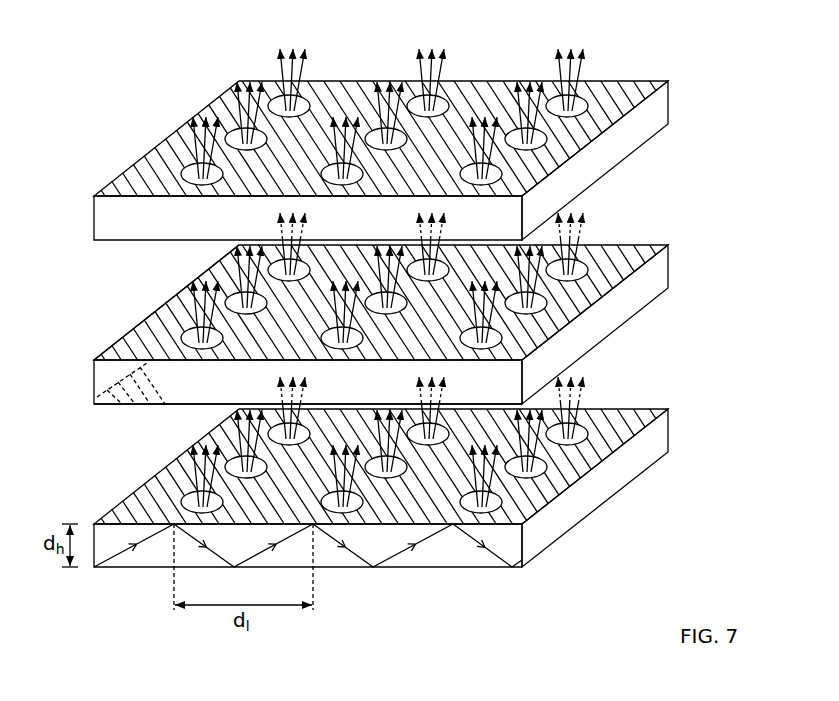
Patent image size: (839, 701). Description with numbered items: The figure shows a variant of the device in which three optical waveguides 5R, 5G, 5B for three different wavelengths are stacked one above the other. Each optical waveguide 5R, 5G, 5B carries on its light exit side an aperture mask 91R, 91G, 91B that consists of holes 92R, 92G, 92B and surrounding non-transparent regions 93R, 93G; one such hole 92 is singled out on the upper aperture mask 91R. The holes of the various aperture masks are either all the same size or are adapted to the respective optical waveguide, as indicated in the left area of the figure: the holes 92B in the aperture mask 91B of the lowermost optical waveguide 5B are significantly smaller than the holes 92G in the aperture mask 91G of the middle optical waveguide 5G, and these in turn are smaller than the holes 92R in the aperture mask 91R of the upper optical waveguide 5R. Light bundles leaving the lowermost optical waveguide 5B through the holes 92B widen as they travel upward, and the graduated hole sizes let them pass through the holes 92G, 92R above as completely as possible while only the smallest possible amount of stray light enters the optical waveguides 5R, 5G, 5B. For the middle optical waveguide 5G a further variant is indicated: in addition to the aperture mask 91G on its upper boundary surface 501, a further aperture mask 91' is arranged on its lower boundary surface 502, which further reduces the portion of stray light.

The optical waveguide 5R is at (652, 118).
The optical waveguide 5G is at (652, 282).
The optical waveguide 5B is at (652, 446).
The aperture mask 91R is at (652, 87).
The aperture mask 91G is at (652, 251).
The aperture mask 91B is at (652, 415).
The further aperture mask 91' is at (272, 428).
The hole 92 is at (593, 83).
The holes 92R is at (190, 168).
The holes 92G is at (190, 332).
The holes 92B is at (197, 500).
The non-transparent regions 93R is at (177, 150).
The non-transparent regions 93G is at (177, 314).
The upper boundary surface 501 is at (103, 347).
The lower boundary surface 502 is at (118, 408).